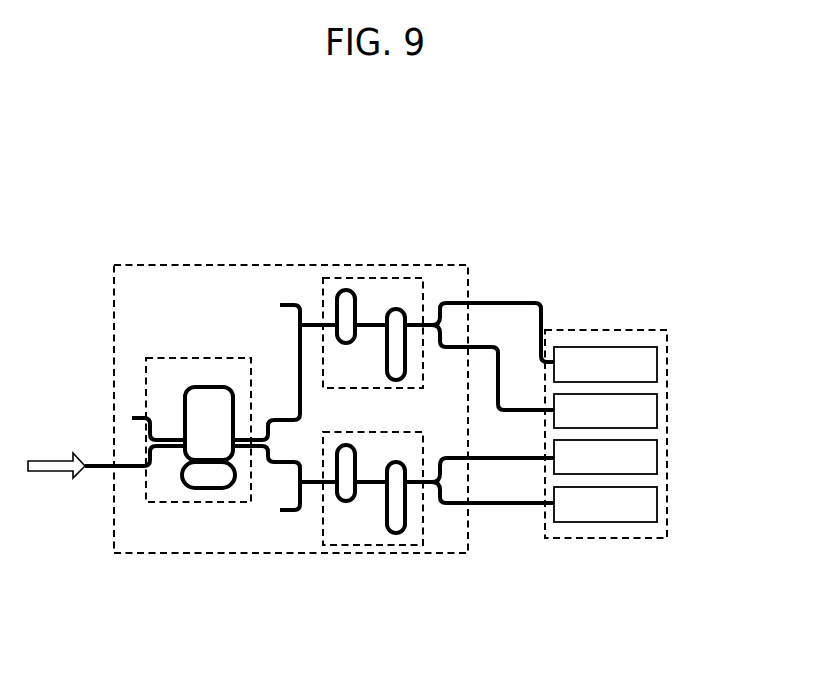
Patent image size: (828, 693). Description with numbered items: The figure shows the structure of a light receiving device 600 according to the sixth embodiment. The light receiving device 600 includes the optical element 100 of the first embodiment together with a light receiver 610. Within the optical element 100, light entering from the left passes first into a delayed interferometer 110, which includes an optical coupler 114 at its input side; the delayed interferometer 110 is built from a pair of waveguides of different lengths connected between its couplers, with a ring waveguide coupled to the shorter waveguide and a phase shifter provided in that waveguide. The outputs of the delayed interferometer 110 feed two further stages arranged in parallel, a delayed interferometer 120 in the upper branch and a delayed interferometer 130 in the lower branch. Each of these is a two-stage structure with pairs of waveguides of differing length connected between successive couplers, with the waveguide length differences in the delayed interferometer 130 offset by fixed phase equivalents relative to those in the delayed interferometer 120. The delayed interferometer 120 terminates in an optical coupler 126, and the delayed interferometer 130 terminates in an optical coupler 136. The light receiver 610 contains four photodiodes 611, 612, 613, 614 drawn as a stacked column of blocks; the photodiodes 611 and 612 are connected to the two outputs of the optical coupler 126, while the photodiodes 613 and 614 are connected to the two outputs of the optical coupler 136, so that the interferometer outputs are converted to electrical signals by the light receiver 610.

The optical element 100 is at (205, 554).
The delayed interferometer 110 is at (192, 411).
The optical coupler 114 is at (173, 444).
The delayed interferometer 120 is at (355, 278).
The optical coupler 126 is at (415, 323).
The delayed interferometer 130 is at (353, 546).
The optical coupler 136 is at (413, 484).
The light receiving device 600 is at (632, 207).
The light receiver 610 is at (615, 330).
The photodiode 611 is at (657, 366).
The photodiode 612 is at (657, 413).
The photodiode 613 is at (657, 459).
The photodiode 614 is at (657, 505).